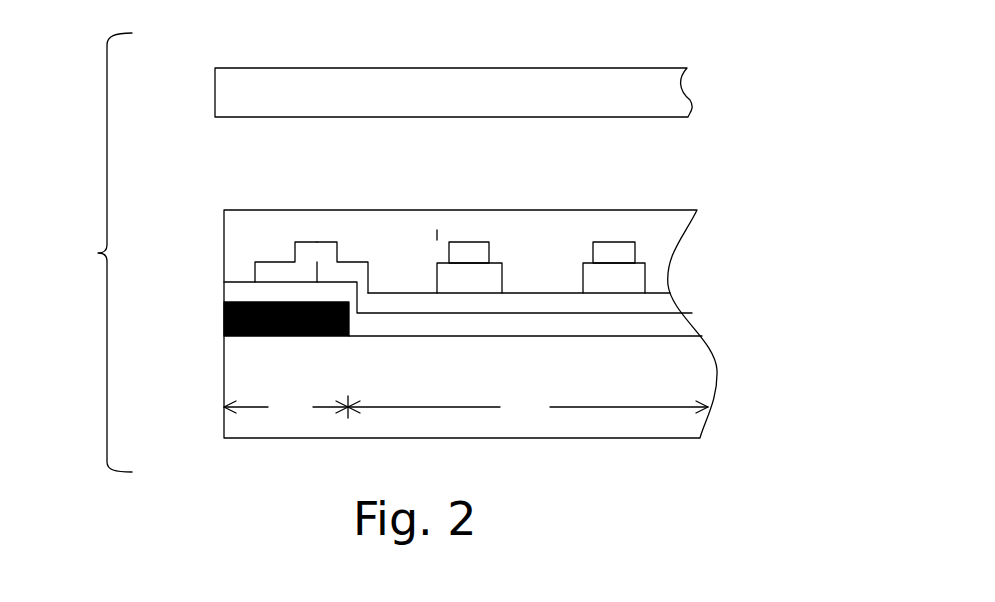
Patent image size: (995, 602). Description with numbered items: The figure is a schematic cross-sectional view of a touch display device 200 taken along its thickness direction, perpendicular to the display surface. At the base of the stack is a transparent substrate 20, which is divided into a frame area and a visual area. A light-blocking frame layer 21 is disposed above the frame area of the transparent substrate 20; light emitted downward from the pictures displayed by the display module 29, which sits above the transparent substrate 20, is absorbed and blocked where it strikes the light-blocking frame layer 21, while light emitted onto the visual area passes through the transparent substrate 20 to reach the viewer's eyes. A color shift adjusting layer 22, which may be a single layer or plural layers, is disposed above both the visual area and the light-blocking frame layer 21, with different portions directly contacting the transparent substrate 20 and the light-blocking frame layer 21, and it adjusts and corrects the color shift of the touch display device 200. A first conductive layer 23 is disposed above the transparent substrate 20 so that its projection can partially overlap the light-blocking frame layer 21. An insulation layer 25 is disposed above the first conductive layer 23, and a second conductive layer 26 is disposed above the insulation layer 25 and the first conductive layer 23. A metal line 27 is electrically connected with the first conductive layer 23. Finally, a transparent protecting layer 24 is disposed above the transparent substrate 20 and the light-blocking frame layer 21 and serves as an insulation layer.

The touch display device 200 is at (98, 253).
The display module 29 is at (385, 85).
The transparent substrate 20 is at (240, 387).
The light-blocking frame layer 21 is at (222, 327).
The color shift adjusting layer 22 is at (415, 305).
The first conductive layer 23 is at (342, 272).
The transparent protecting layer 24 is at (437, 230).
The insulation layer 25 is at (472, 280).
The second conductive layer 26 is at (620, 248).
The metal line 27 is at (280, 272).